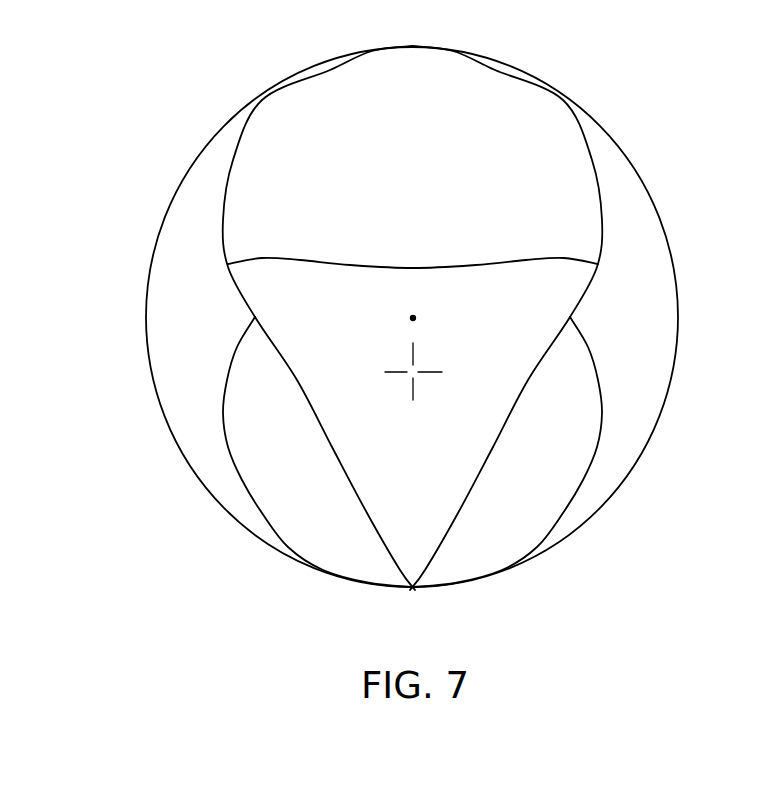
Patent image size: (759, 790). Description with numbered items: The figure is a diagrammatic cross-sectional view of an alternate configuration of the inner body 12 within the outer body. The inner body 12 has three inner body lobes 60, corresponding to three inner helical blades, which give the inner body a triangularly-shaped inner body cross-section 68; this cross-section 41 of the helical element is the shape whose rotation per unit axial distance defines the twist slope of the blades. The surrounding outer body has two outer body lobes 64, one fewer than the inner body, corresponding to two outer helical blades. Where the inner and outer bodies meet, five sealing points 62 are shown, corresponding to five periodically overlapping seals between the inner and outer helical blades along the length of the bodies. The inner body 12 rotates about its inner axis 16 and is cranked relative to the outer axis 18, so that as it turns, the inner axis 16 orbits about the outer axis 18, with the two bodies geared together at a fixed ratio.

The inner body 12 is at (413, 245).
The inner axis 16 is at (416, 371).
The outer axis 18 is at (416, 317).
The cross-section 41 is at (362, 282).
The inner body lobes 60 is at (275, 268).
The sealing points 62 is at (229, 265).
The outer body lobes 64 is at (155, 360).
The triangularly-shaped inner body cross-section 68 is at (477, 452).